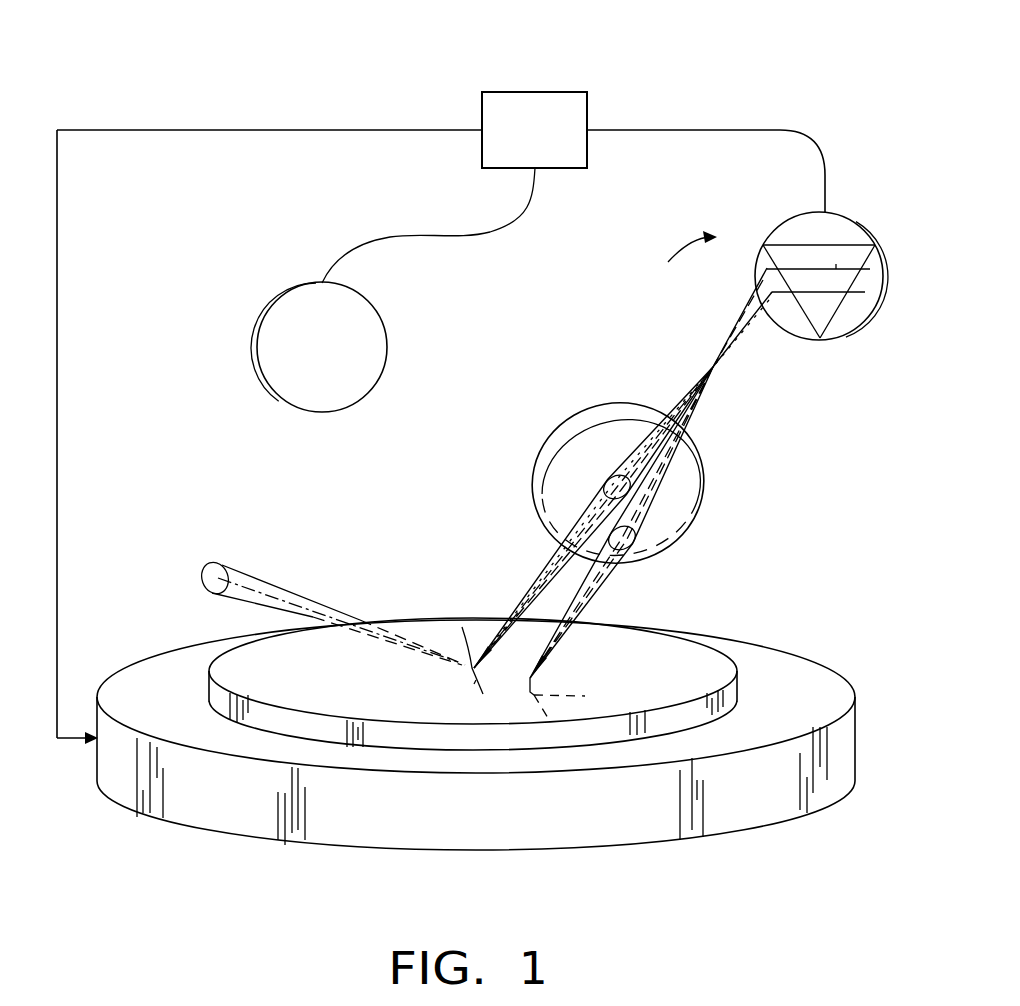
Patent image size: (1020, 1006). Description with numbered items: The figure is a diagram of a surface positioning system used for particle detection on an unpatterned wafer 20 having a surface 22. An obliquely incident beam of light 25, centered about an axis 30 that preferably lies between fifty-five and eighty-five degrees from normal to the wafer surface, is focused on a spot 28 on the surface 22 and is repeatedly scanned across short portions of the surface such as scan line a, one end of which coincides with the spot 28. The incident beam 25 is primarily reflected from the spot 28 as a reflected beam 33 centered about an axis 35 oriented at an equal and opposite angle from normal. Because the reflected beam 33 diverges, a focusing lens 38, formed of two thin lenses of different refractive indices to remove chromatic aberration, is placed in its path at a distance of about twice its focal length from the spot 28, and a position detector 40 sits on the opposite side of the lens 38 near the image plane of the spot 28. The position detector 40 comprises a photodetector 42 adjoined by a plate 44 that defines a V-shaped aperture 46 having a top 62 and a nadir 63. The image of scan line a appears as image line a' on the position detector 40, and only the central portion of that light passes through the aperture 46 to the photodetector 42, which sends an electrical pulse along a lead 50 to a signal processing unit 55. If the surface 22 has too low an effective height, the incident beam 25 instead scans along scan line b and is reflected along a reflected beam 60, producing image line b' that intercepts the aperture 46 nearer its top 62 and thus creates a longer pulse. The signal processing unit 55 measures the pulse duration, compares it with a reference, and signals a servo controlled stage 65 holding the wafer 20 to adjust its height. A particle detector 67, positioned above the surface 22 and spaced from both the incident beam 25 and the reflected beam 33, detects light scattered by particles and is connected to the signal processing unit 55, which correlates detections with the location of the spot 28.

The unpatterned wafer 20 is at (745, 680).
The surface 22 is at (688, 640).
The incident beam of light 25 is at (275, 588).
The spot 28 is at (462, 627).
The axis 30 is at (250, 575).
The reflected beam 33 is at (545, 546).
The axis 35 is at (540, 574).
The focusing lens 38 is at (562, 420).
The position detector 40 is at (674, 259).
The photodetector 42 is at (876, 232).
The plate 44 is at (877, 307).
The V-shaped aperture 46 is at (790, 240).
The lead 50 is at (655, 128).
The signal processing unit 55 is at (530, 92).
The reflected beam 60 is at (594, 588).
The top 62 is at (814, 244).
The nadir 63 is at (820, 338).
The servo controlled stage 65 is at (858, 737).
The particle detector 67 is at (275, 298).
The scan line a is at (457, 695).
The scan line b is at (570, 703).
The image line a' is at (766, 332).
The image line b' is at (851, 206).